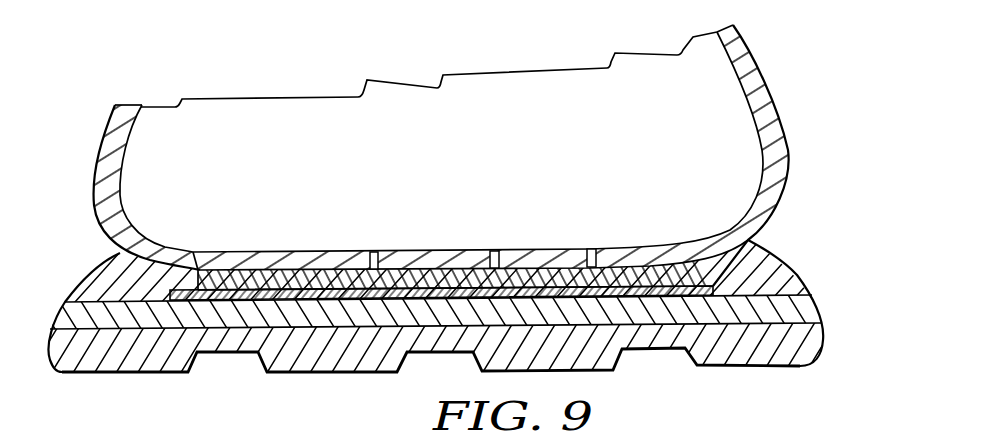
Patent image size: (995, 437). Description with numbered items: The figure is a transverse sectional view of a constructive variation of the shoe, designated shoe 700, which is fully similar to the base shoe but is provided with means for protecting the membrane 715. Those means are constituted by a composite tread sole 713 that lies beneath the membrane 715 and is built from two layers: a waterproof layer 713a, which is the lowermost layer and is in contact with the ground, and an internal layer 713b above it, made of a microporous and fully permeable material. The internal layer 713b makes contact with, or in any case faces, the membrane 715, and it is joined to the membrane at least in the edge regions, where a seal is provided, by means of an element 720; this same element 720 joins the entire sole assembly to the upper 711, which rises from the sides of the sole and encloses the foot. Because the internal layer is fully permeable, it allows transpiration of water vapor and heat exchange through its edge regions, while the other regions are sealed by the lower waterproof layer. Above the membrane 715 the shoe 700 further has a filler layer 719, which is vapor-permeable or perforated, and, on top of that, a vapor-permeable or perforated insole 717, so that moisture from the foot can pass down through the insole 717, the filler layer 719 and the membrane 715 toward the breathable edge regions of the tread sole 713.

The shoe 700 is at (452, 225).
The upper 711 is at (103, 133).
The composite tread sole 713 is at (452, 306).
The waterproof layer 713a is at (308, 360).
The internal layer 713b is at (103, 320).
The membrane 715 is at (633, 290).
The insole 717 is at (318, 252).
The filler layer 719 is at (460, 277).
The element 720 is at (775, 272).